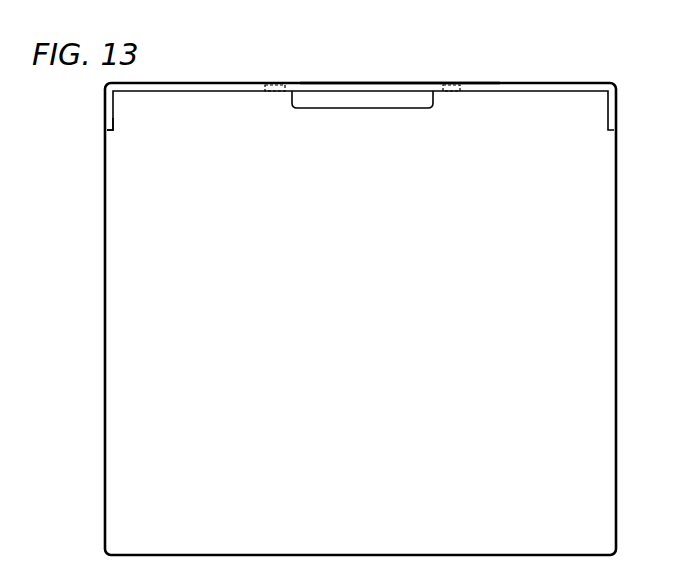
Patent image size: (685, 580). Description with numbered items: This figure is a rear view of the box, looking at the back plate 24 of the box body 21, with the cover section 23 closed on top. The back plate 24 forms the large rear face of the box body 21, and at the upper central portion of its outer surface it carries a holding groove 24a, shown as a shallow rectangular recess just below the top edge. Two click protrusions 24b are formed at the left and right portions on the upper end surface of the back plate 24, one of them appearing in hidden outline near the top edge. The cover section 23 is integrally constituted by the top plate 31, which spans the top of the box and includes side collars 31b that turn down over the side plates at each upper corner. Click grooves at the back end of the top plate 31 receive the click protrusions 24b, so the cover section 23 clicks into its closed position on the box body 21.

The box body 21 is at (616, 266).
The cover section 23 is at (509, 83).
The back plate 24 is at (604, 388).
The holding groove 24a is at (347, 105).
The click protrusion 24b is at (449, 88).
The top plate 31 is at (244, 82).
The side collar 31b is at (107, 125).